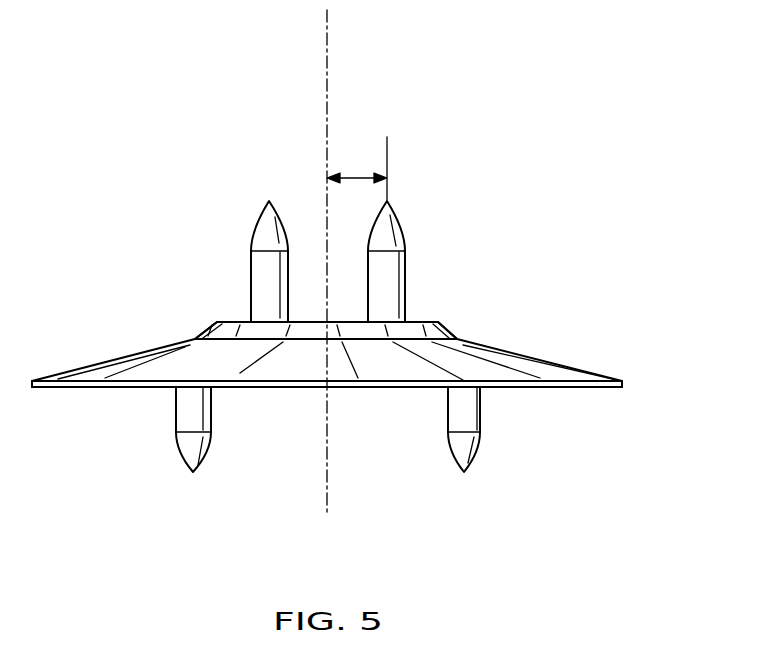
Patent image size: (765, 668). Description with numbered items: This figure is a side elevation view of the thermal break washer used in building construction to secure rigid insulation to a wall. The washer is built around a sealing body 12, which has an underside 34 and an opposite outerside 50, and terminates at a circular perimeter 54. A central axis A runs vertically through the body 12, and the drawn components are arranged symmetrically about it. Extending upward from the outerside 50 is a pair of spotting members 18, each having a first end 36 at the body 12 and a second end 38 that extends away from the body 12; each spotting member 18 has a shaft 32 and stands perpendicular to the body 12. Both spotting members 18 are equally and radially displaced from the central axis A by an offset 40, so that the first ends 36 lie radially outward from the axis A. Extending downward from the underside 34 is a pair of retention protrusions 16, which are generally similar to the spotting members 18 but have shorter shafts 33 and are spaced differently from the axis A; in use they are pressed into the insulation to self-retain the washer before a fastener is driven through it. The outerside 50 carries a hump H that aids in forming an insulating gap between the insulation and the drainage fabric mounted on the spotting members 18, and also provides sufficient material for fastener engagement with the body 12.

The central axis A is at (328, 42).
The sealing body 12 is at (595, 238).
The retention protrusions 16 is at (188, 408).
The spotting members 18 is at (262, 272).
The shaft 32 is at (272, 305).
The shafts 33 is at (213, 418).
The underside 34 is at (562, 390).
The first end 36 is at (228, 322).
The second end 38 is at (268, 200).
The offset 40 is at (356, 177).
The outerside 50 is at (553, 358).
The circular perimeter 54 is at (628, 378).
The hump H is at (200, 338).